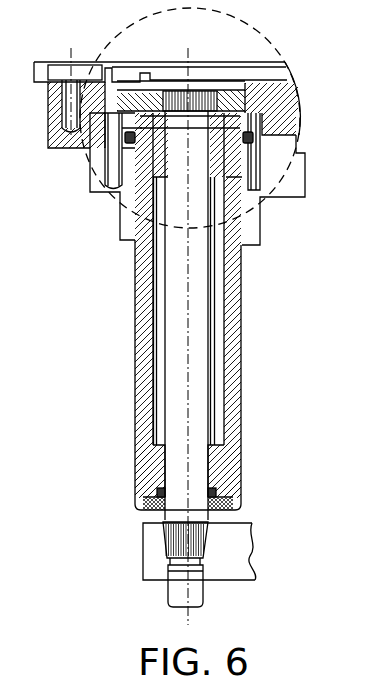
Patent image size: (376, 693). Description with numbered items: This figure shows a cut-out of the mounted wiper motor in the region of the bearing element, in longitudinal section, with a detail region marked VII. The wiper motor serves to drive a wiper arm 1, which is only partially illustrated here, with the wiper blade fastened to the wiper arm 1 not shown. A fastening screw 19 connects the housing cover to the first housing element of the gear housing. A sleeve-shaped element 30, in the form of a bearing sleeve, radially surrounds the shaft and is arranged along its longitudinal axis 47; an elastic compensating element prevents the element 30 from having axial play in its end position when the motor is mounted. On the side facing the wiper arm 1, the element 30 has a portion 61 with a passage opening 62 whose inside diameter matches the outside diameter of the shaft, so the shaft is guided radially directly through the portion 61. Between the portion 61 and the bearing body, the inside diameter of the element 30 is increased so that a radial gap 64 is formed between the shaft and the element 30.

The wiper arm 1 is at (240, 550).
The fastening screw 19 is at (62, 62).
The sleeve-shaped element 30 is at (236, 336).
The longitudinal axis 47 is at (197, 452).
The portion 61 is at (150, 470).
The passage opening 62 is at (216, 478).
The radial gap 64 is at (218, 292).
The detail view circle VII is at (270, 36).